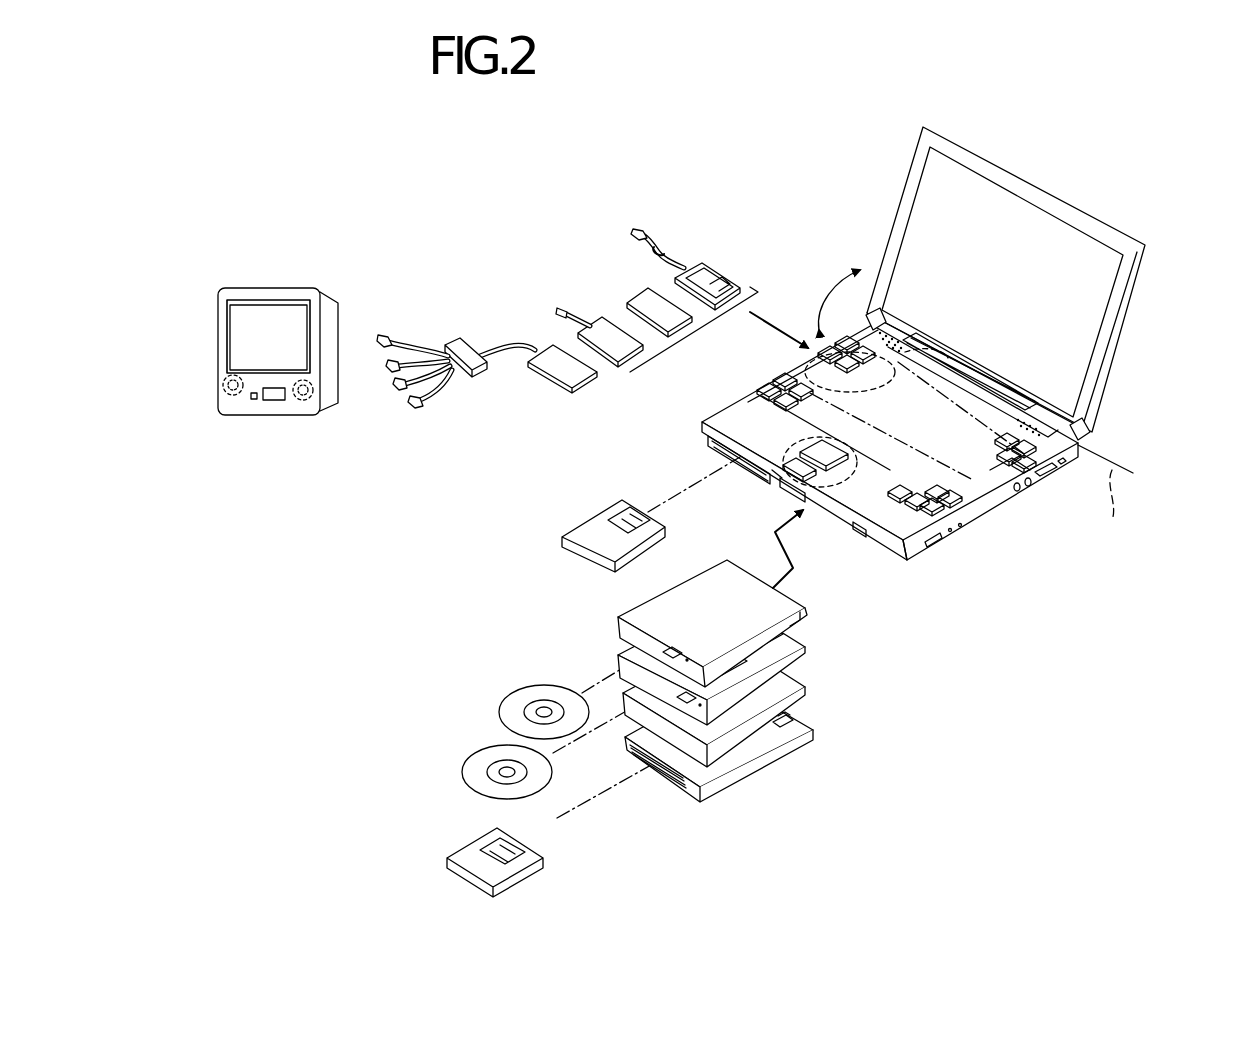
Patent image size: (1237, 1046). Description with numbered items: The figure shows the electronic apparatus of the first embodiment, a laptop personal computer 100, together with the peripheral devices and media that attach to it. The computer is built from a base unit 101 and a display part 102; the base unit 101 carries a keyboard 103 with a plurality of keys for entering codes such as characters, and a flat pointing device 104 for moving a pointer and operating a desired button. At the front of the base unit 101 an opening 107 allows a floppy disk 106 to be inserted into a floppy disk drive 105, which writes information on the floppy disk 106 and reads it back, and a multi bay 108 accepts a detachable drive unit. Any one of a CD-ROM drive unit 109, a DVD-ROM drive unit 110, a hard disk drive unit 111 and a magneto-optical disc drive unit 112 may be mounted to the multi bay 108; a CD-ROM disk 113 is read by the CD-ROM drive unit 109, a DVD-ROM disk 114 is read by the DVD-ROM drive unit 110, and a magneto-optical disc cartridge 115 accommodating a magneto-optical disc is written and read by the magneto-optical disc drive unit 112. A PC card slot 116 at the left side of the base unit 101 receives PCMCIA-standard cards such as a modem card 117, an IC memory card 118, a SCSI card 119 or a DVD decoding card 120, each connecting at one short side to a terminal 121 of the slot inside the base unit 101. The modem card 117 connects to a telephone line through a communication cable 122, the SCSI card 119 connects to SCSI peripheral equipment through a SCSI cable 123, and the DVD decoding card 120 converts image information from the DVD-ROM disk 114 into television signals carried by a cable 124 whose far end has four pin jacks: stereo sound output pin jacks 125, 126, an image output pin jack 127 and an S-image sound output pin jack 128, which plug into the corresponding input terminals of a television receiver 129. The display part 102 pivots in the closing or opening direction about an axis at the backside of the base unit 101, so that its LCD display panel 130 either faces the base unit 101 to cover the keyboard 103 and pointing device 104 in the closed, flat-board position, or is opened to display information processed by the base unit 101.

The laptop personal computer 100 is at (882, 170).
The base unit 101 is at (705, 430).
The display part 102 is at (1040, 187).
The keyboard 103 is at (1003, 472).
The pointing device 104 is at (725, 458).
The floppy disk drive 105 is at (760, 480).
The floppy disk 106 is at (560, 538).
The opening 107 is at (740, 457).
The multi bay 108 is at (855, 537).
The CD-ROM drive unit 109 is at (808, 610).
The DVD-ROM drive unit 110 is at (808, 648).
The hard disk drive unit 111 is at (805, 688).
The magneto-optical disc drive unit 112 is at (815, 730).
The CD-ROM disk 113 is at (500, 693).
The DVD-ROM disk 114 is at (470, 768).
The magneto-optical disc cartridge 115 is at (447, 858).
The PC card slot 116 is at (800, 372).
The modem card 117 is at (703, 266).
The IC memory card 118 is at (637, 295).
The SCSI card 119 is at (580, 337).
The DVD decoding card 120 is at (565, 388).
The terminal 121 is at (945, 355).
The communication cable 122 is at (638, 226).
The SCSI cable 123 is at (572, 318).
The cable 124 is at (472, 375).
The stereo sound output pin jack 125 is at (418, 408).
The stereo sound output pin jack 126 is at (402, 390).
The image output pin jack 127 is at (390, 372).
The S-image sound output pin jack 128 is at (380, 336).
The television receiver 129 is at (255, 285).
The display panel 130 is at (1085, 292).